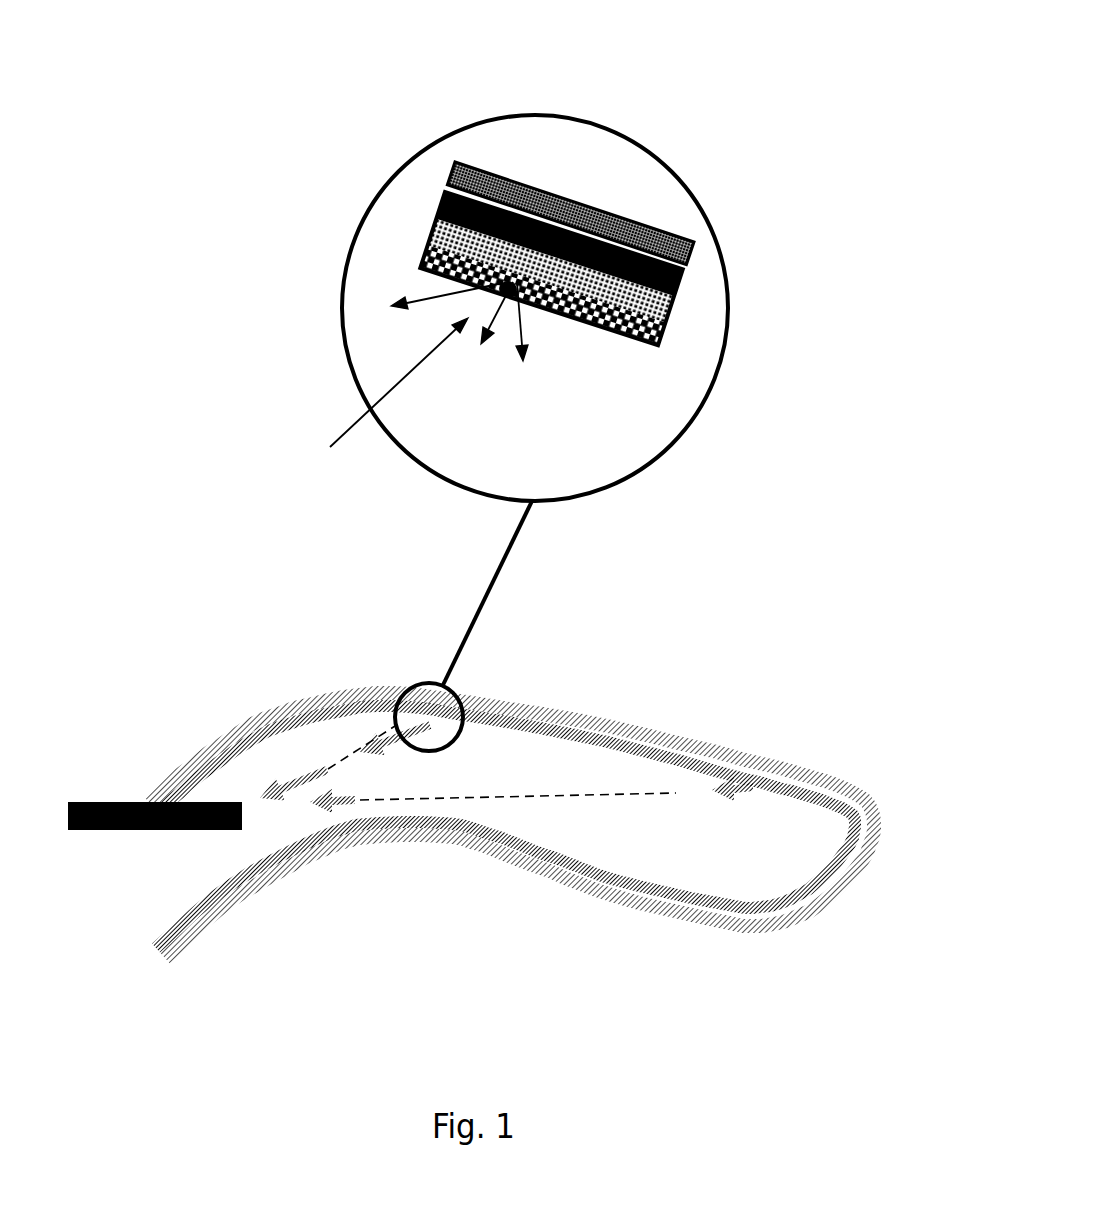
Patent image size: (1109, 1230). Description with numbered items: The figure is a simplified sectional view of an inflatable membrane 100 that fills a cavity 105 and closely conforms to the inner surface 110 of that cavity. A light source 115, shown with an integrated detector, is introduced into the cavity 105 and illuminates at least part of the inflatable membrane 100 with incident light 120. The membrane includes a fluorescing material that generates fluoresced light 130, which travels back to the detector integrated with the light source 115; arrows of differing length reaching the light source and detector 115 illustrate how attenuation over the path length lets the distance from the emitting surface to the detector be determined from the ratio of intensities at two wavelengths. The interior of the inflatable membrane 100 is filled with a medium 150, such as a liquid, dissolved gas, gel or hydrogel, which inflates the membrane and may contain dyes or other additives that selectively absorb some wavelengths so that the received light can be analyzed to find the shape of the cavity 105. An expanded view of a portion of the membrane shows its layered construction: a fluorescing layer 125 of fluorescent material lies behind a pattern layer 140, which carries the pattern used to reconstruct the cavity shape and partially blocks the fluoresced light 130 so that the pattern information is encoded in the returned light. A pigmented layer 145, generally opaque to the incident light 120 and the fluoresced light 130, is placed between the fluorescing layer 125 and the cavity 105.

The inflatable membrane 100 is at (613, 740).
The cavity 105 is at (728, 745).
The inner surface 110 is at (452, 188).
The light source 115 is at (98, 802).
The incident light 120 is at (341, 432).
The fluorescing layer 125 is at (670, 313).
The fluoresced light 130 is at (305, 321).
The pattern layer 140 is at (665, 335).
The pigmented layer 145 is at (680, 288).
The medium 150 is at (541, 789).